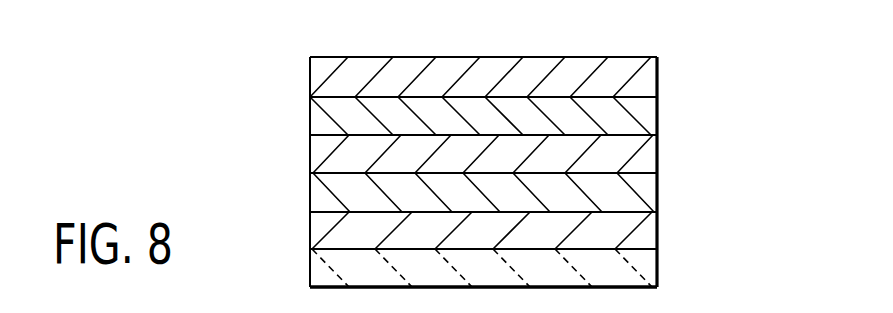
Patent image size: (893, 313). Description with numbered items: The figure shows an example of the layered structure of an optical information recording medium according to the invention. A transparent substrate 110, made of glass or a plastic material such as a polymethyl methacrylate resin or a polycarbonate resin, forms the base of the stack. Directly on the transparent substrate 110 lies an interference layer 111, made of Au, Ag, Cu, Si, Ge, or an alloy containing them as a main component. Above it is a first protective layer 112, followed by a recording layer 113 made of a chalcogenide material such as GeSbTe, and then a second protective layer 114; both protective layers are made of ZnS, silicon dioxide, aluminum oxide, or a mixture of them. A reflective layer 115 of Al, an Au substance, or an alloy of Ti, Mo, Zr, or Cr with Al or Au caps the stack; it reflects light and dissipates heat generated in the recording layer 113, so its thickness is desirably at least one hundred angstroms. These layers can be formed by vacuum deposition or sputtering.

The transparent substrate 110 is at (657, 269).
The interference layer 111 is at (657, 230).
The first protective layer 112 is at (657, 192).
The recording layer 113 is at (657, 153).
The second protective layer 114 is at (657, 115).
The reflective layer 115 is at (657, 77).